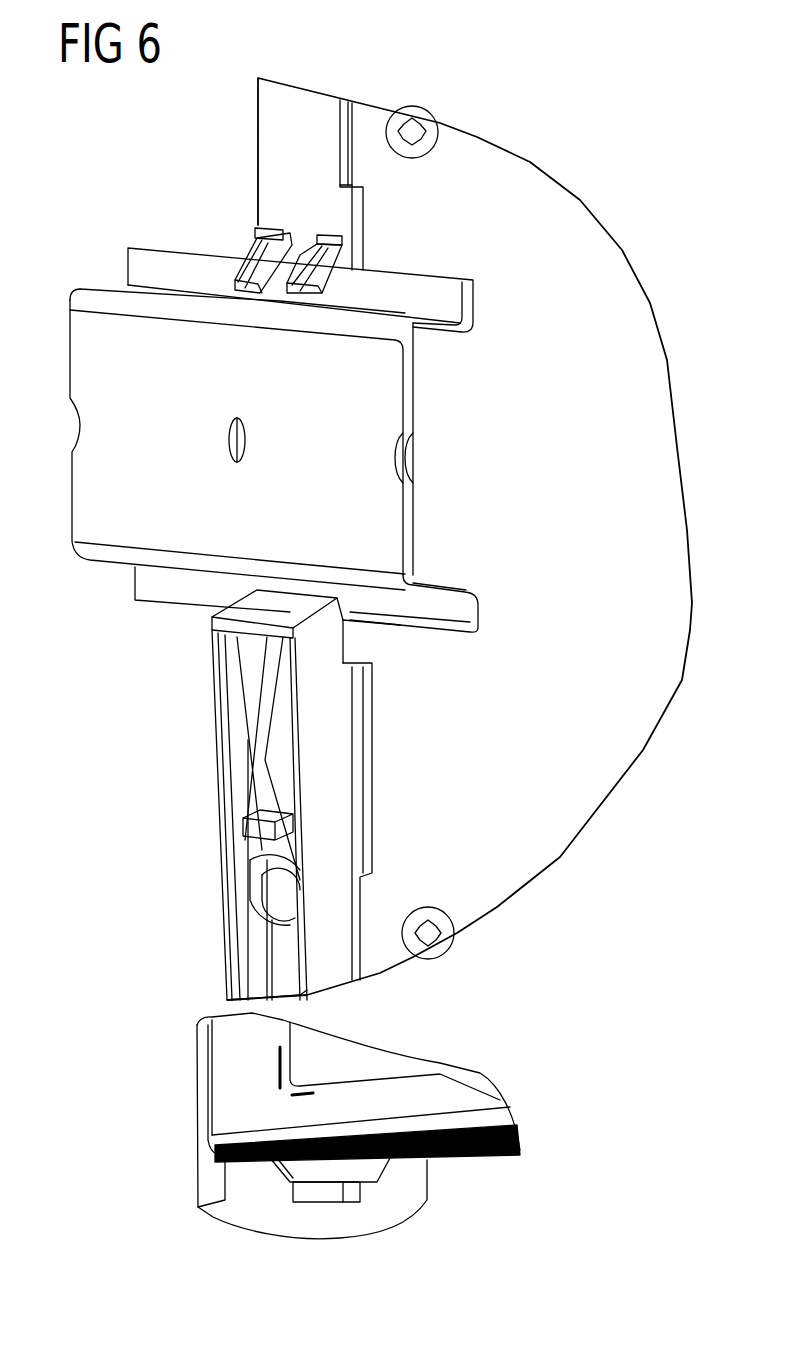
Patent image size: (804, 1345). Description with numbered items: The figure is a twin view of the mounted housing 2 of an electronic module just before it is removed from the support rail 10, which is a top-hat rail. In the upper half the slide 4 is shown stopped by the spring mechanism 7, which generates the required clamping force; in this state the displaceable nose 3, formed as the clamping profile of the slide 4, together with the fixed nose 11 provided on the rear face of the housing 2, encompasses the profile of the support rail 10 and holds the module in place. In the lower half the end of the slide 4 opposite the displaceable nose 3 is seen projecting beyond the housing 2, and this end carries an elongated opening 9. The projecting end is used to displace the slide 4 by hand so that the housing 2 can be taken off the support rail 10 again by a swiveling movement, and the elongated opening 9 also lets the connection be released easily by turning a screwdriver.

The housing 2 is at (504, 243).
The displaceable nose 3 is at (278, 607).
The slide 4 is at (328, 793).
The spring mechanism 7 is at (260, 903).
The elongated opening 9 is at (312, 1188).
The support rail 10 is at (135, 400).
The fixed nose 11 is at (320, 253).